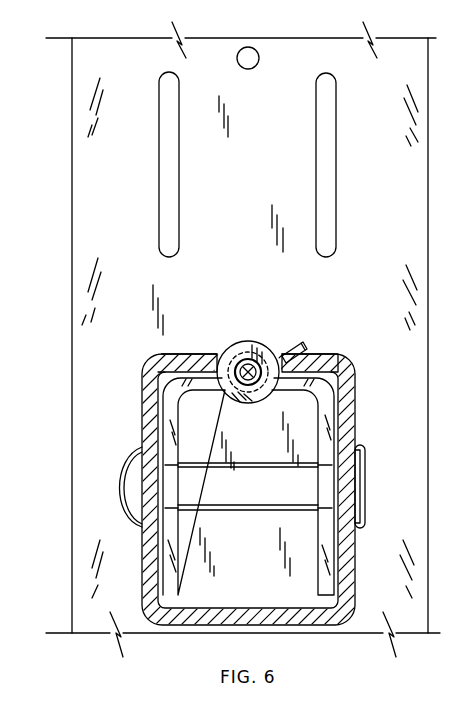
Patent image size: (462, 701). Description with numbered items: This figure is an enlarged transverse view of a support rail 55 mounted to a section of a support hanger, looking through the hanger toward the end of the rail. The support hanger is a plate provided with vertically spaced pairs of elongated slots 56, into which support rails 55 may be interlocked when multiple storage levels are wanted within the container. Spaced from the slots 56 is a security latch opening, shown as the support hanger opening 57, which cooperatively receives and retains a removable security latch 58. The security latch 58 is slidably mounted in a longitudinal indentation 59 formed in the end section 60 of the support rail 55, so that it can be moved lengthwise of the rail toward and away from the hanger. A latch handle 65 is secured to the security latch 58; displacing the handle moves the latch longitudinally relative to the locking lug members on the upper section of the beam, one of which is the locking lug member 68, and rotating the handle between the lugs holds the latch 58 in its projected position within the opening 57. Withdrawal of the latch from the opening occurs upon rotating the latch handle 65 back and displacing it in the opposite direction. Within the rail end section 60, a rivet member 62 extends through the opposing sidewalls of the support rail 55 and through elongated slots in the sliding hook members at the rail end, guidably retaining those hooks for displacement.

The support rail 55 is at (355, 373).
The slots 56 is at (179, 201).
The support hanger opening 57 is at (259, 63).
The security latch 58 is at (238, 341).
The longitudinal indentation 59 is at (240, 401).
The end section 60 is at (334, 410).
The rivet member 62 is at (248, 486).
The latch handle 65 is at (308, 338).
The locking lug member 68 is at (245, 358).